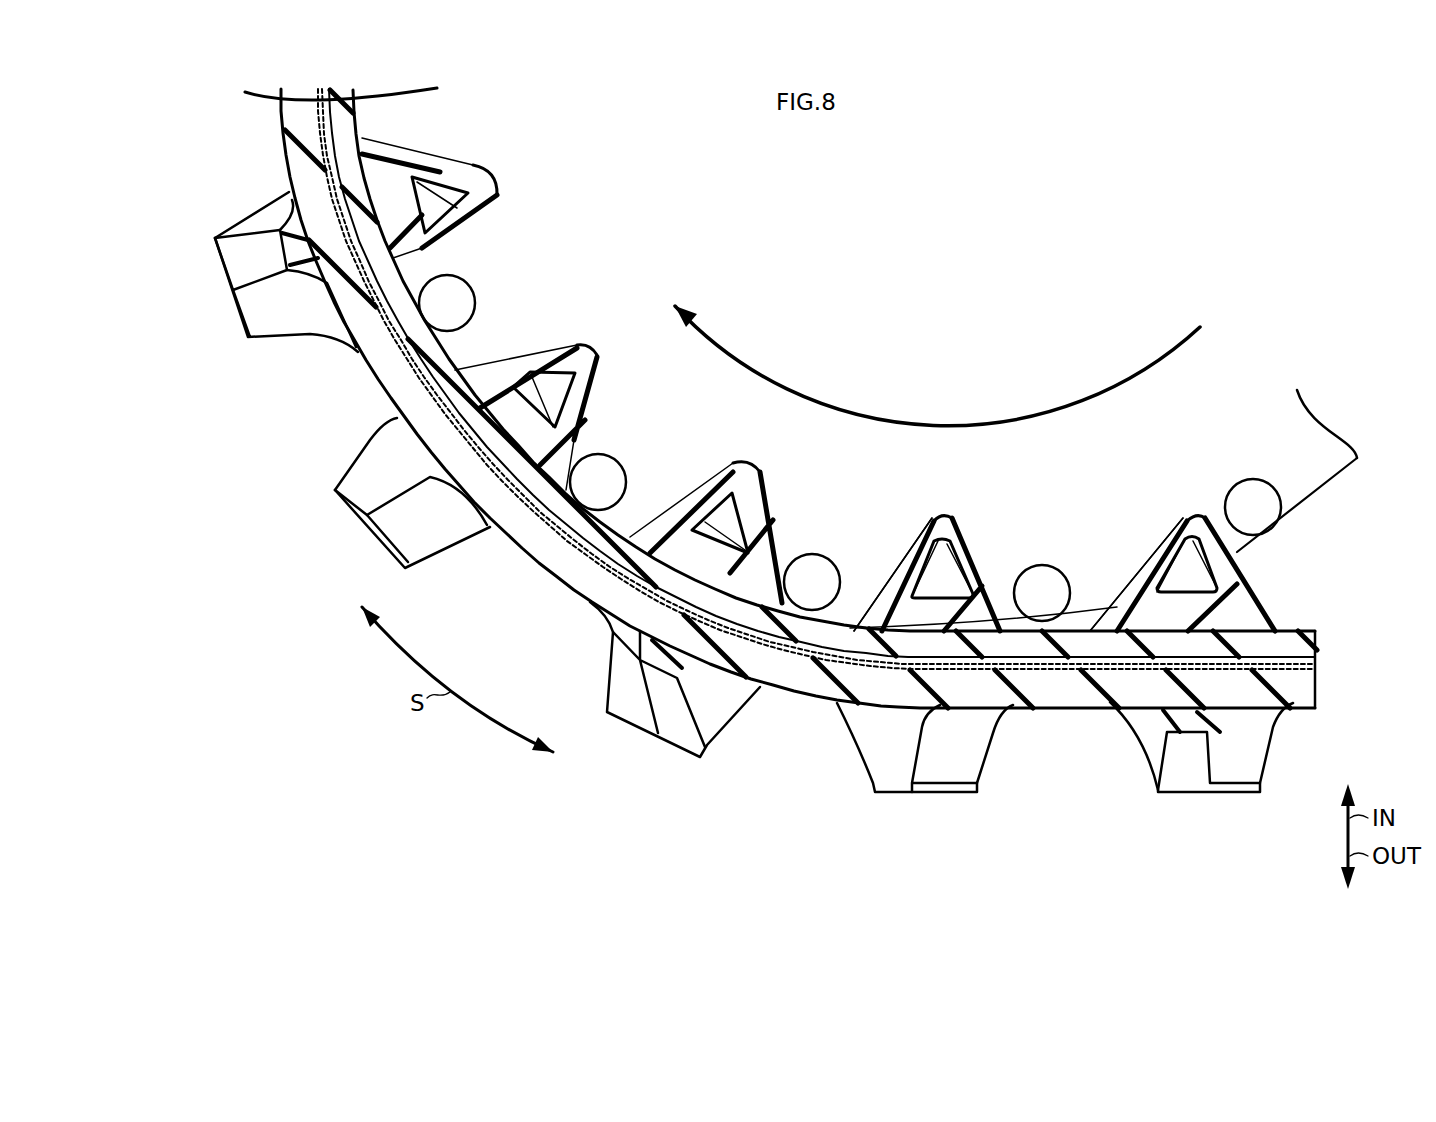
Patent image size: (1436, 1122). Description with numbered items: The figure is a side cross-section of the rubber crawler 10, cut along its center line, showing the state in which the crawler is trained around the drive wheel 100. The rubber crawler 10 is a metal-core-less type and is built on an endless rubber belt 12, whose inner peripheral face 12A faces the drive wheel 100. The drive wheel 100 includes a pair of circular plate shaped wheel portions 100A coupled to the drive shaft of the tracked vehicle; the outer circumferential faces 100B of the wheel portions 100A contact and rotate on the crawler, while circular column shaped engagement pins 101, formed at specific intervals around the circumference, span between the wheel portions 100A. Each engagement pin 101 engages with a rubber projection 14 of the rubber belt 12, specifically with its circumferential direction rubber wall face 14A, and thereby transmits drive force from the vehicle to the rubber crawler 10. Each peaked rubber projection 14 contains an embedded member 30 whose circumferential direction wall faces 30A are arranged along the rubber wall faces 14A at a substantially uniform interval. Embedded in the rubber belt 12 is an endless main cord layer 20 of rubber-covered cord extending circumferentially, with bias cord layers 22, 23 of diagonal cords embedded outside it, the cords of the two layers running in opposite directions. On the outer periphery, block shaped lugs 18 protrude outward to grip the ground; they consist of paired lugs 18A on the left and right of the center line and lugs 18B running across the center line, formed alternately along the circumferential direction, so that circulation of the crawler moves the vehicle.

The rubber crawler 10 is at (263, 397).
The rubber belt 12 is at (1080, 623).
The inner peripheral face 12A is at (1306, 626).
The rubber projection 14 is at (505, 193).
The circumferential direction rubber wall face 14A is at (965, 508).
The lug 18 is at (724, 529).
The lug 18A is at (333, 492).
The lug 18B is at (228, 265).
The main cord layer 20 is at (1297, 657).
The bias cord layer 22 is at (1300, 678).
The bias cord layer 23 is at (1297, 666).
The embedded member 30 is at (447, 178).
The circumferential direction wall face 30A is at (913, 543).
The drive wheel 100 is at (1353, 467).
The wheel portion 100A is at (1312, 500).
The outer circumferential face 100B is at (1308, 480).
The engagement pin 101 is at (1042, 564).